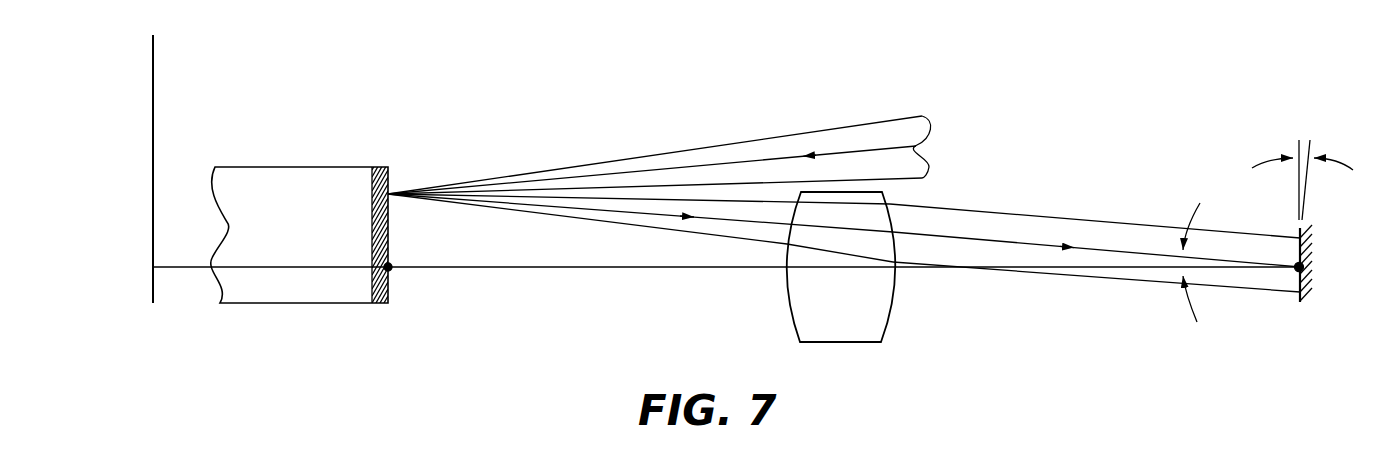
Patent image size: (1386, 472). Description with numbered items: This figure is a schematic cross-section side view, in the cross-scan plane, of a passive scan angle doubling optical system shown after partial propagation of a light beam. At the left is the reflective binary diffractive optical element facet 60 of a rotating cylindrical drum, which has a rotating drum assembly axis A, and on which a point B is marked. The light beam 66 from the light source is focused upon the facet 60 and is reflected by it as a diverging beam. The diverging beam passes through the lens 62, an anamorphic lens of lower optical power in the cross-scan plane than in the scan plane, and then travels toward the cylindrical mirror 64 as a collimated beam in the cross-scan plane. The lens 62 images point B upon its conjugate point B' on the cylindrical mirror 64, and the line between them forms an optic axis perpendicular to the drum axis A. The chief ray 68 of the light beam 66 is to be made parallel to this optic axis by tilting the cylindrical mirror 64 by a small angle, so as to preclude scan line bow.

The reflective binary diffractive optical element facet 60 is at (389, 290).
The lens 62 is at (840, 343).
The cylindrical mirror 64 is at (1297, 301).
The light beam 66 is at (832, 128).
The chief ray 68 is at (738, 161).
The rotating drum assembly axis A is at (153, 85).
The point on facet B is at (411, 252).
The conjugate point on cylindrical mirror B' is at (1329, 254).